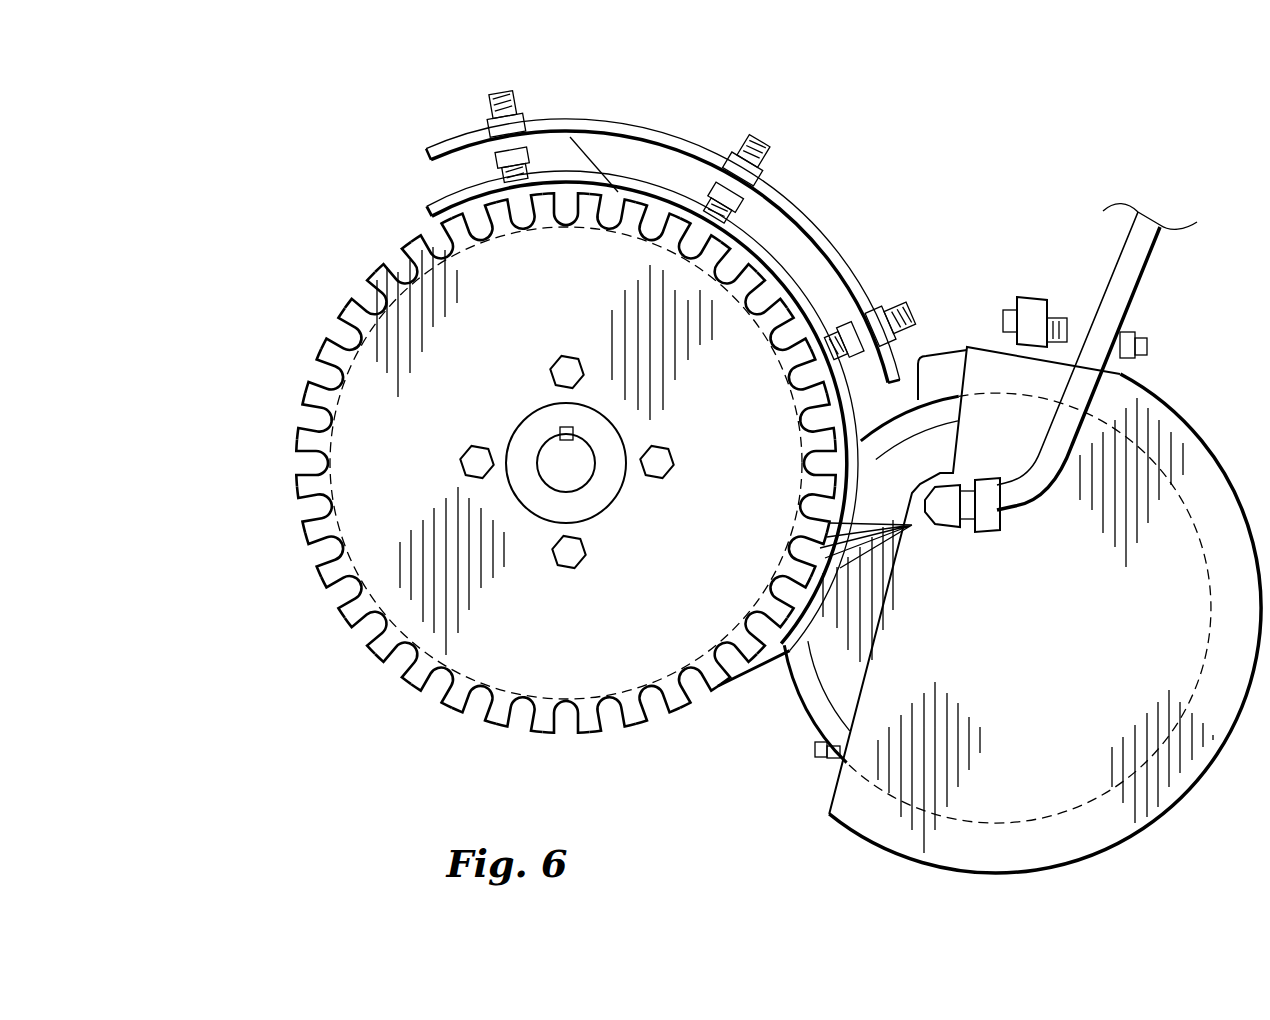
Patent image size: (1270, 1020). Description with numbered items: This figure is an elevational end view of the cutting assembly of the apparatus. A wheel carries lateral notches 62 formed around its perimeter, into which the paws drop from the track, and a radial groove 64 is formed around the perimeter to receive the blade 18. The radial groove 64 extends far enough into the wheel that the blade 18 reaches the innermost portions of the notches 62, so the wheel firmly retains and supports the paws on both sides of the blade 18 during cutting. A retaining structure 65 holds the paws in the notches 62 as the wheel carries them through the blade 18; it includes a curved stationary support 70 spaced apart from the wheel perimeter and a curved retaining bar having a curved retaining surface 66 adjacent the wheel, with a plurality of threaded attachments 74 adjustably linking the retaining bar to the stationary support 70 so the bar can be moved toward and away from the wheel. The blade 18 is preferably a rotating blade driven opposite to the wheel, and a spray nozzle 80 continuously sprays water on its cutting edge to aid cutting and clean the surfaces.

The blade 18 is at (840, 690).
The lateral notches 62 is at (342, 335).
The radial groove 64 is at (348, 618).
The retaining structure 65 is at (783, 232).
The curved retaining surface 66 is at (663, 197).
The curved stationary support 70 is at (833, 247).
The threaded attachments 74 is at (918, 308).
The spray nozzle 80 is at (953, 535).